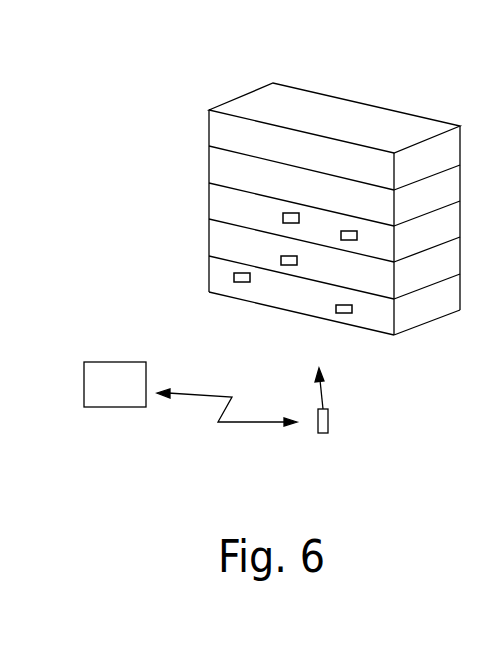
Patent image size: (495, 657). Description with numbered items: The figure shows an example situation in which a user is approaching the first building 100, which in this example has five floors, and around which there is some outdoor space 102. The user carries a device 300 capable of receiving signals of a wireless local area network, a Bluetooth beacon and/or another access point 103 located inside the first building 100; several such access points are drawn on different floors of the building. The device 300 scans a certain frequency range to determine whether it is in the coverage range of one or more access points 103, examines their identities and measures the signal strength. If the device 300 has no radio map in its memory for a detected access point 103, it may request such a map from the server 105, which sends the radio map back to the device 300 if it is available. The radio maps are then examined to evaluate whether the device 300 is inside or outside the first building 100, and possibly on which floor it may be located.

The first building 100 is at (409, 113).
The outdoor space 102 is at (183, 281).
The access point 103 is at (336, 311).
The server 105 is at (99, 407).
The device 300 is at (323, 433).